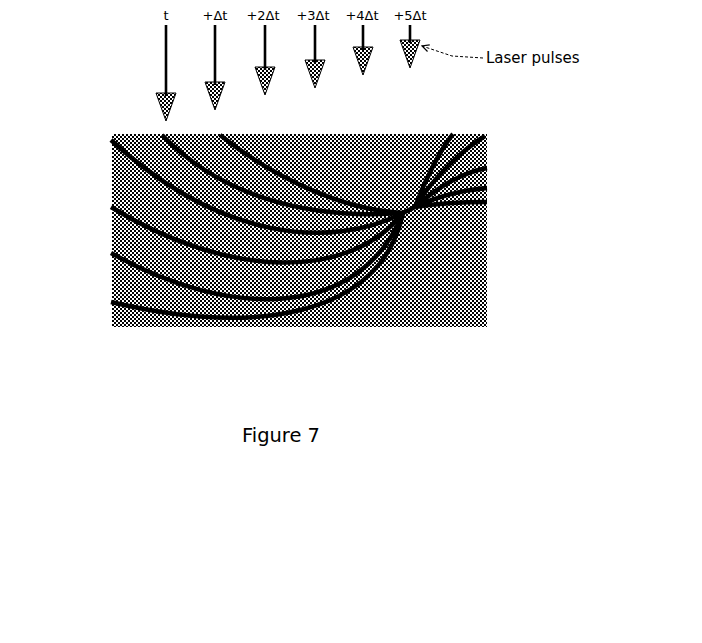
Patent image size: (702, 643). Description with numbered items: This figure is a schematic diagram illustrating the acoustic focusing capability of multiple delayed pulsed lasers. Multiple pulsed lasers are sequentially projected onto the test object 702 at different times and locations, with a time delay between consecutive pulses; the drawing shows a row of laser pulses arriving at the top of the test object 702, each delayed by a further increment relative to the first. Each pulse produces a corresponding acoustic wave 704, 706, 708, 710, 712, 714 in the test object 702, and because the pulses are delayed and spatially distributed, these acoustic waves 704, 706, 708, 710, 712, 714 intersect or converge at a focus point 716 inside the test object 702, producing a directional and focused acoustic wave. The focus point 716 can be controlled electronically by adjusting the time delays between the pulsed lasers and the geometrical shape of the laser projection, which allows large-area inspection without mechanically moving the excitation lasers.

The test object 702 is at (484, 288).
The acoustic wave 704 is at (187, 315).
The acoustic wave 706 is at (228, 289).
The acoustic wave 708 is at (163, 240).
The acoustic wave 710 is at (145, 175).
The acoustic wave 712 is at (205, 176).
The acoustic wave 714 is at (292, 178).
The focus point 716 is at (418, 218).